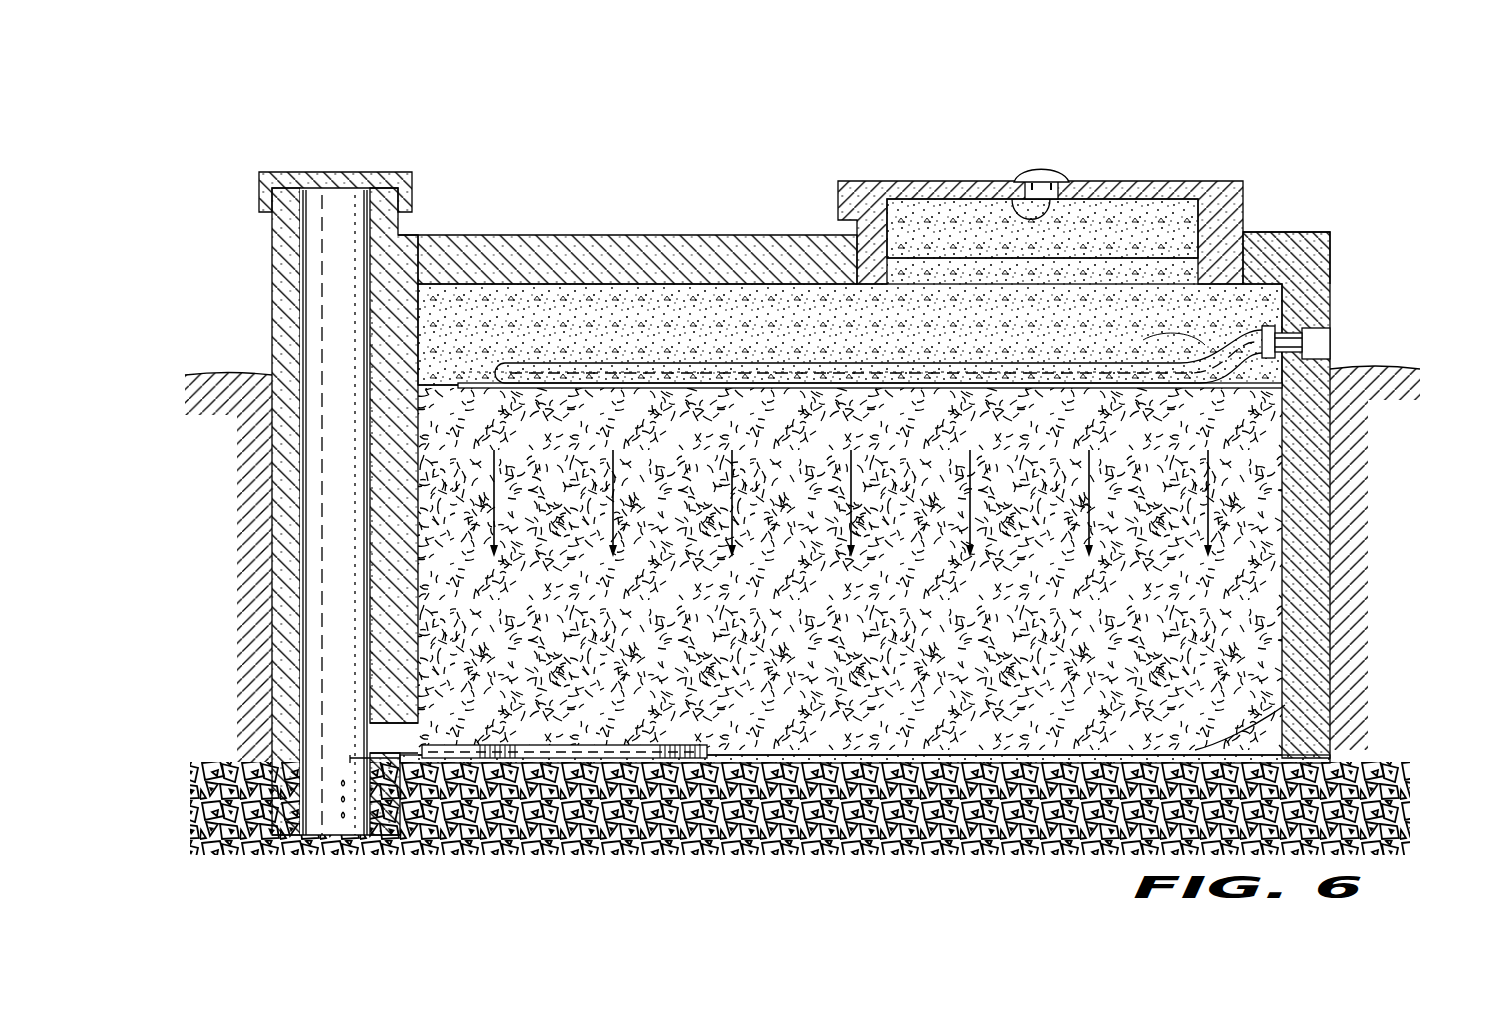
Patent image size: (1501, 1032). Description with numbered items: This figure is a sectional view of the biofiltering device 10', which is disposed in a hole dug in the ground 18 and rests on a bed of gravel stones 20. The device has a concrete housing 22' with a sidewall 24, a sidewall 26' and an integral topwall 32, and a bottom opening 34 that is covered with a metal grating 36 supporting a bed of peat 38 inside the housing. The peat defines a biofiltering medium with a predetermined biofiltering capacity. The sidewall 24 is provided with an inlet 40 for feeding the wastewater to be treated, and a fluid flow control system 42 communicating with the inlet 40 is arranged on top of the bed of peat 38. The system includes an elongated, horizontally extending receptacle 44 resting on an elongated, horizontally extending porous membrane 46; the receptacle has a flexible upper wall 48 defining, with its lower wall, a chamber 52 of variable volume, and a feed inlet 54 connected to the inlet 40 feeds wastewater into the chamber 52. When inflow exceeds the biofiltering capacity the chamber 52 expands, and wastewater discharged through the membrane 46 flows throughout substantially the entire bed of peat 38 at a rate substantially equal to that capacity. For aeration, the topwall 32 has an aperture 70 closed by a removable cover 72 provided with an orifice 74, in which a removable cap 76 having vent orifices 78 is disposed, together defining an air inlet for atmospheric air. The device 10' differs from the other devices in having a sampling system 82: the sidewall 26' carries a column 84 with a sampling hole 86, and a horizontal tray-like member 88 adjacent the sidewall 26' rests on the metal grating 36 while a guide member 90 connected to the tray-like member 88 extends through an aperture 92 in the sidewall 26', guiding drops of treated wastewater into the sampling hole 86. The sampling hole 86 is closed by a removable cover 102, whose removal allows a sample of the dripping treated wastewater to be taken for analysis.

The biofiltering device 10' is at (1392, 123).
The ground 18 is at (1358, 470).
The bed of gravel stones 20 is at (1395, 806).
The housing 22' is at (850, 257).
The sidewall 24 is at (1305, 548).
The sidewall 26' is at (301, 511).
The topwall 32 is at (657, 248).
The bottom opening 34 is at (1285, 705).
The metal grating 36 is at (1260, 756).
The bed of peat 38 is at (1195, 625).
The inlet 40 is at (1313, 345).
The fluid flow control system 42 is at (453, 372).
The receptacle 44 is at (735, 358).
The porous membrane 46 is at (480, 378).
The upper wall 48 is at (1143, 342).
The chamber 52 is at (1290, 232).
The feed inlet 54 is at (1280, 328).
The aperture 70 is at (908, 235).
The removable cover 72 is at (938, 190).
The orifice 74 is at (1022, 222).
The removable cap 76 is at (1040, 176).
The vent orifices 78 is at (1070, 192).
The sampling system 82 is at (545, 745).
The column 84 is at (285, 511).
The sampling hole 86 is at (328, 278).
The tray-like member 88 is at (428, 702).
The guide member 90 is at (368, 747).
The aperture 92 is at (385, 733).
The removable cover 102 is at (335, 178).